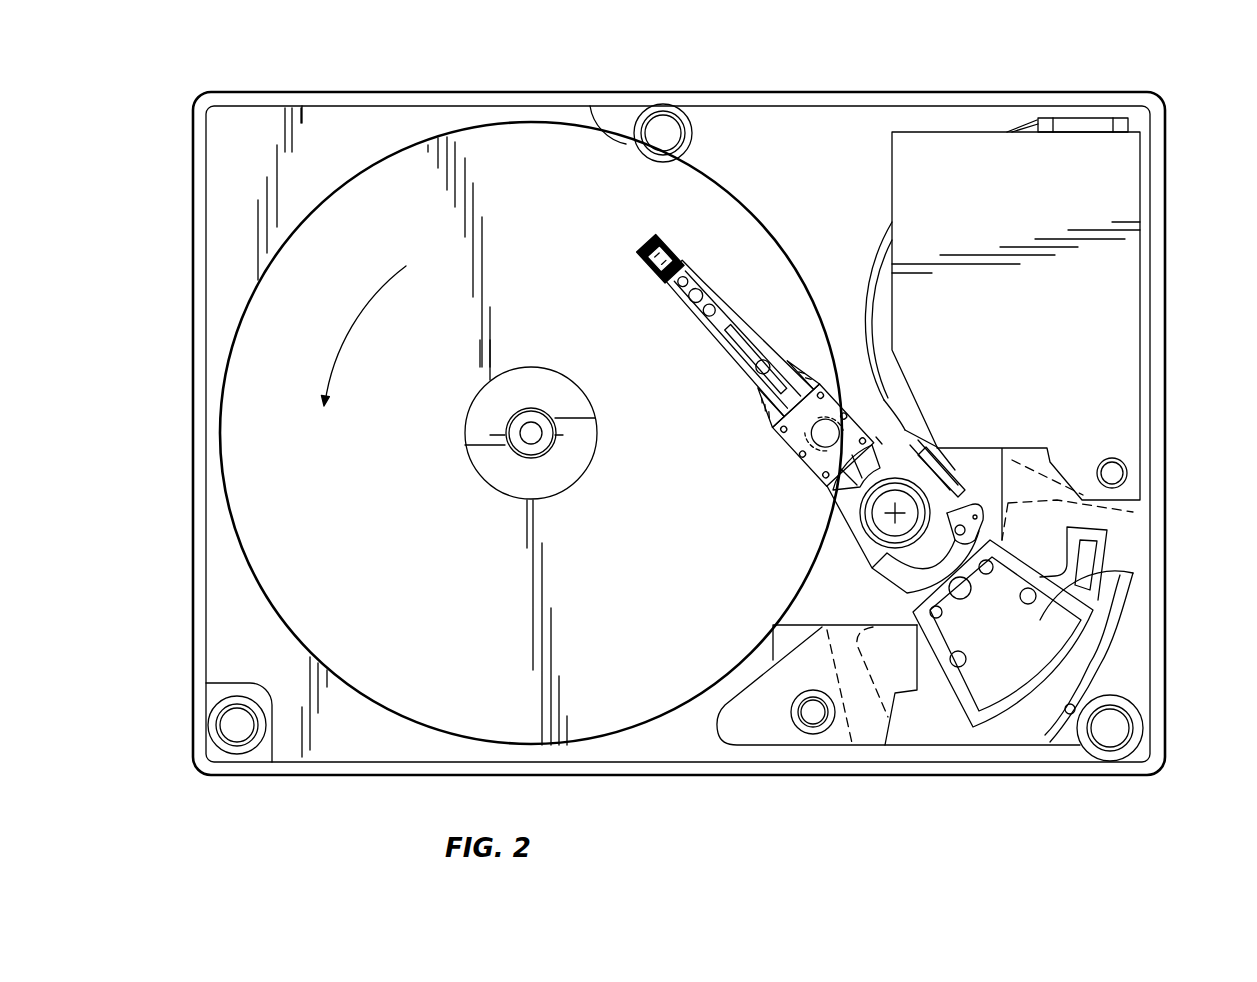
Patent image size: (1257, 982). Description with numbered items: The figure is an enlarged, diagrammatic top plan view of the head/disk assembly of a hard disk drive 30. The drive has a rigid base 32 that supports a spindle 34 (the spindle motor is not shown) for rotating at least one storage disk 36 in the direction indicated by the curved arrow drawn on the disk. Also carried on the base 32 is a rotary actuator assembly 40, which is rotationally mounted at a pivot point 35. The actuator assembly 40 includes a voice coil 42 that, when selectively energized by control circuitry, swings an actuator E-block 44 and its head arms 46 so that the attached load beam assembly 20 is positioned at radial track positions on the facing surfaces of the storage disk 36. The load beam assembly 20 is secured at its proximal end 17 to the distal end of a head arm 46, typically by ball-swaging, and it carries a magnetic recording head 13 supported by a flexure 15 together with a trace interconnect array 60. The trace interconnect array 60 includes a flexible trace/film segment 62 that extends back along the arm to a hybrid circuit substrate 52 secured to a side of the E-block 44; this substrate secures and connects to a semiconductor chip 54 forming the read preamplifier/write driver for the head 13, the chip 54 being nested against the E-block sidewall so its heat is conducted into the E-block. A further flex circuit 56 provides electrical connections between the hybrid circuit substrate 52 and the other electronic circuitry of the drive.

The head 13 is at (670, 243).
The flexure 15 is at (728, 338).
The proximal end 17 is at (775, 433).
The load beam assembly 20 is at (702, 315).
The hard disk drive 30 is at (243, 805).
The rigid base 32 is at (338, 776).
The spindle 34 is at (560, 472).
The pivot point 35 is at (893, 514).
The storage disk 36 is at (393, 185).
The rotary actuator assembly 40 is at (950, 460).
The voice coil 42 is at (1095, 598).
The actuator E-block 44 is at (882, 432).
The head arms 46 is at (777, 437).
The hybrid circuit substrate 52 is at (945, 480).
The semiconductor chip 54 is at (940, 445).
The flex circuit 56 is at (873, 307).
The trace interconnect array 60 is at (688, 310).
The flexible trace/film segment 62 is at (852, 405).